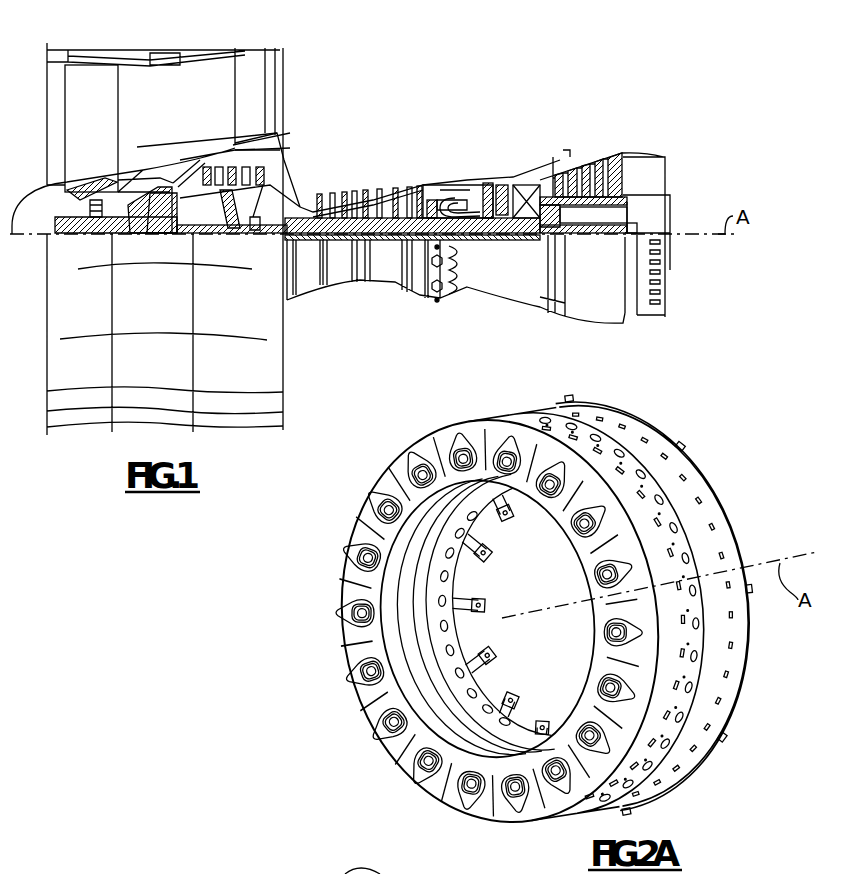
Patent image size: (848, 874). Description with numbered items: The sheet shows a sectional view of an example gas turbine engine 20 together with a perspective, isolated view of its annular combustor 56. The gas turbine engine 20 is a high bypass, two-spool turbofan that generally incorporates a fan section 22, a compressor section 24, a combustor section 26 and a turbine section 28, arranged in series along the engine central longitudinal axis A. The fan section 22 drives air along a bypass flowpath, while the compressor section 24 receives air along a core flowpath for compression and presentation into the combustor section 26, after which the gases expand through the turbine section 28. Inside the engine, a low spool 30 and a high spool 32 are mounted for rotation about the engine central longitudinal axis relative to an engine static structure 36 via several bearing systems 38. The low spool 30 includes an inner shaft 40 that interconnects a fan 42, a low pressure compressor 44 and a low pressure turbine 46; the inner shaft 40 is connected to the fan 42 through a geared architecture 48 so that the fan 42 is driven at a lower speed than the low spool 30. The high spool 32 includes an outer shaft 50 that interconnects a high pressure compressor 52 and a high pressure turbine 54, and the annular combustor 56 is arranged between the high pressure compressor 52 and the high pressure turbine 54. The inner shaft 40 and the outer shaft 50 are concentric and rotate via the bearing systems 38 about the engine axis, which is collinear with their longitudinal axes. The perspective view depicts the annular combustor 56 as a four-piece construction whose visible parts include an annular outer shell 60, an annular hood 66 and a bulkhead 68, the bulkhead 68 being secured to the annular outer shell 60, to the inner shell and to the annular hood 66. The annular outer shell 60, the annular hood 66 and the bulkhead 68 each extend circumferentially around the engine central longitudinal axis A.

In FIG. 1, the gas turbine engine 20 is at (475, 86).
In FIG. 1, the fan section 22 is at (120, 45).
In FIG. 1, the compressor section 24 is at (313, 176).
In FIG. 1, the combustor section 26 is at (463, 165).
In FIG. 1, the turbine section 28 is at (563, 141).
In FIG. 1, the low spool 30 is at (388, 248).
In FIG. 1, the high spool 32 is at (415, 200).
In FIG. 1, the engine static structure 36 is at (413, 297).
In FIG. 1, the bearing systems 38 is at (258, 240).
In FIG. 1, the inner shaft 40 is at (302, 290).
In FIG. 1, the fan 42 is at (108, 133).
In FIG. 1, the low pressure compressor 44 is at (283, 140).
In FIG. 1, the low pressure turbine 46 is at (590, 153).
In FIG. 1, the geared architecture 48 is at (172, 240).
In FIG. 1, the outer shaft 50 is at (470, 240).
In FIG. 1, the high pressure compressor 52 is at (366, 185).
In FIG. 1, the high pressure turbine 54 is at (506, 200).
In FIG. 1, the annular combustor 56 is at (465, 196).
In FIG. 2A, the annular combustor 56 is at (365, 752).
In FIG. 2A, the annular outer shell 60 is at (625, 432).
In FIG. 2A, the annular hood 66 is at (440, 442).
In FIG. 2A, the bulkhead 68 is at (200, 873).